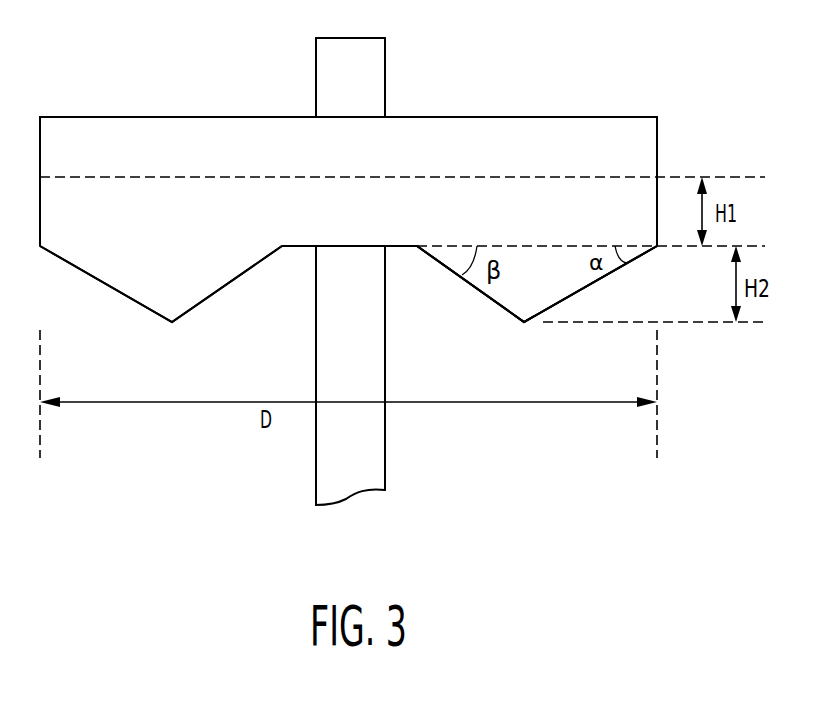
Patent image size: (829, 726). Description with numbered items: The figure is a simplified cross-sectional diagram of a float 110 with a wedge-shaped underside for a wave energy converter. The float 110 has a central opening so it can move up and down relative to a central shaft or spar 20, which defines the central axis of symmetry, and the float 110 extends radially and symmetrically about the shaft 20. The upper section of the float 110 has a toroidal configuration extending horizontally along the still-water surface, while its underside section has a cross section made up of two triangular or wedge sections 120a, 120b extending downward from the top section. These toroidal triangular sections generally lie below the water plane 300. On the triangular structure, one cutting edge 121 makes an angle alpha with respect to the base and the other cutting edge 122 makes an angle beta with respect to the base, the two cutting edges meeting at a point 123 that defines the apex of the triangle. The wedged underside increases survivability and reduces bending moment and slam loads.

The central shaft or spar 20 is at (385, 58).
The float 110 is at (589, 135).
The water plane 300 is at (163, 178).
The triangular section 120a is at (172, 303).
The triangular section 120b is at (552, 283).
The cutting edge 121 is at (618, 256).
The cutting edge 122 is at (450, 270).
The point 123 is at (523, 323).